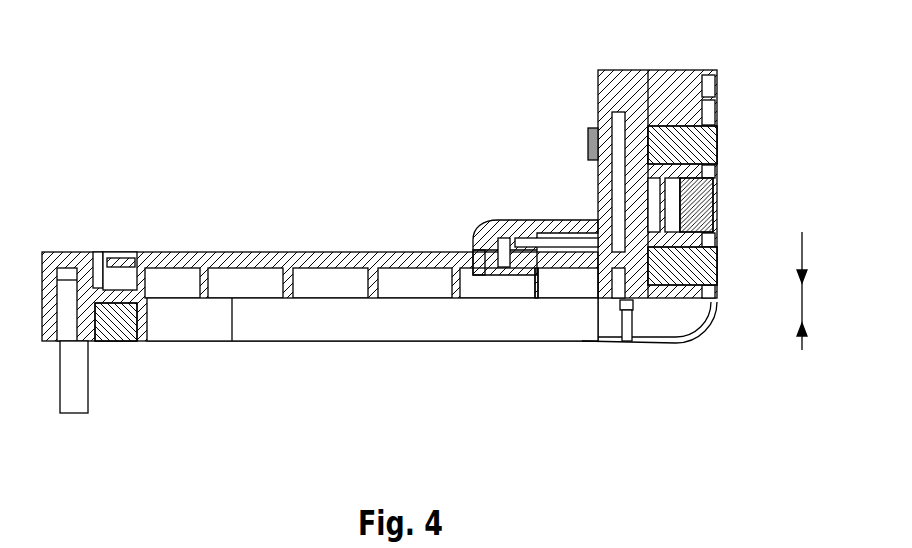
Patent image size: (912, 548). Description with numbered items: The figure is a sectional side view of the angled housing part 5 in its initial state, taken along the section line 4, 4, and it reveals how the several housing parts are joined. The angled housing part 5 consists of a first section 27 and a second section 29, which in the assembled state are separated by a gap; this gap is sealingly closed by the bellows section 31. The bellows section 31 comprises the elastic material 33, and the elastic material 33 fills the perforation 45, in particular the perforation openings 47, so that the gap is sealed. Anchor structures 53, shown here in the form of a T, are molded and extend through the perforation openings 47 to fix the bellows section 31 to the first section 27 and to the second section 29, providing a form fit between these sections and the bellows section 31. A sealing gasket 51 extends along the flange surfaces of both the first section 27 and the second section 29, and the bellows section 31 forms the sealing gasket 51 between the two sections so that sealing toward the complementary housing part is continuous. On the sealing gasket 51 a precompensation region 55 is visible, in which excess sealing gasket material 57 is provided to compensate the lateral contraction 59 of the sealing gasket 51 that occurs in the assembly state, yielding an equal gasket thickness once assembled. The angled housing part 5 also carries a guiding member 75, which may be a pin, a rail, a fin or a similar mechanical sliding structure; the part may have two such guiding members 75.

The section line 4- 4 is at (494, 184).
The angled housing part 5 is at (538, 168).
The first section 27 is at (672, 74).
The second section 29 is at (238, 250).
The bellows section 31 is at (479, 224).
The elastic material 33 is at (478, 264).
The perforation 45 is at (500, 281).
The perforation openings 47 is at (469, 256).
The sealing gasket 51 is at (115, 332).
The anchor structures 53 is at (593, 125).
The precompensation region 55 is at (627, 348).
The excess sealing gasket material 57 is at (628, 343).
The lateral contraction 59 is at (804, 256).
The guiding member 75 is at (70, 404).